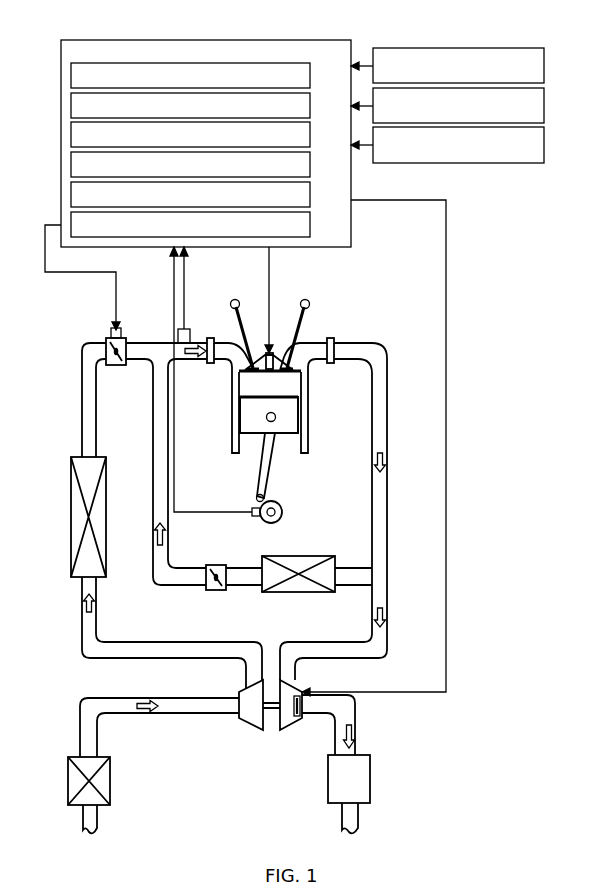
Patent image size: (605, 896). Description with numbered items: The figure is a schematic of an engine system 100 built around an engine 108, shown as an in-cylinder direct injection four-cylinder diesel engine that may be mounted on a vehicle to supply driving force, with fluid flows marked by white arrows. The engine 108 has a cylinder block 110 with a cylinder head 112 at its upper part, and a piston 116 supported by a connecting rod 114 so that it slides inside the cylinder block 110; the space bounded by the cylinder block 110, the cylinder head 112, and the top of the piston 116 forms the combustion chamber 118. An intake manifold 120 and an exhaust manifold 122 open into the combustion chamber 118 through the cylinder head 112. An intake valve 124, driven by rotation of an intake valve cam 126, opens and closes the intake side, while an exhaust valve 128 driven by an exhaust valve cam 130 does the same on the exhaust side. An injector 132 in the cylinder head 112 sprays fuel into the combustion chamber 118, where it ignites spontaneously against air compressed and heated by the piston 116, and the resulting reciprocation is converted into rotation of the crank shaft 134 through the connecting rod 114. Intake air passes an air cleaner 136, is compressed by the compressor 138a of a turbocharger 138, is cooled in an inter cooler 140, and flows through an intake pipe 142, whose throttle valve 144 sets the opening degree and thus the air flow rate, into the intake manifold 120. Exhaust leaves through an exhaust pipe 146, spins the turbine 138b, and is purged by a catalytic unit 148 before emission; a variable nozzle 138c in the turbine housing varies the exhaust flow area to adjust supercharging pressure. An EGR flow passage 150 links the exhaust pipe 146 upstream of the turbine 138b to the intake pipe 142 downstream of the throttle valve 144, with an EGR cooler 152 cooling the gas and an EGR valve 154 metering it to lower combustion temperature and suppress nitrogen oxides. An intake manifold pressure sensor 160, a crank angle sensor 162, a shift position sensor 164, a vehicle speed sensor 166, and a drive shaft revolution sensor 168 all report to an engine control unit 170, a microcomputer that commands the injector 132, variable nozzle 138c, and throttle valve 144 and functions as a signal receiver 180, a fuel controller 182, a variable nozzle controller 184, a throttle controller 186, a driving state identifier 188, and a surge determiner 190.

The engine system 100 is at (45, 91).
The engine 108 is at (360, 304).
The cylinder block 110 is at (232, 410).
The cylinder head 112 is at (232, 384).
The connecting rod 114 is at (275, 455).
The piston 116 is at (250, 440).
The combustion chamber 118 is at (273, 382).
The intake manifold 120 is at (233, 340).
The exhaust manifold 122 is at (300, 341).
The intake valve 124 is at (234, 318).
The intake valve cam 126 is at (231, 301).
The exhaust valve 128 is at (300, 322).
The exhaust valve cam 130 is at (308, 301).
The injector 132 is at (268, 351).
The crank shaft 134 is at (282, 502).
The air cleaner 136 is at (70, 757).
The turbocharger 138 is at (262, 748).
The compressor 138a is at (252, 731).
The turbine 138b is at (285, 731).
The variable nozzle 138c is at (301, 730).
The inter cooler 140 is at (73, 457).
The intake pipe 142 is at (86, 343).
The throttle valve 144 is at (107, 339).
The exhaust pipe 146 is at (383, 343).
The catalytic unit 148 is at (370, 755).
The EGR flow passage 150 is at (176, 586).
The EGR cooler 152 is at (296, 556).
The EGR valve 154 is at (217, 564).
The intake manifold pressure sensor 160 is at (178, 330).
The crank angle sensor 162 is at (252, 510).
The shift position sensor 164 is at (545, 67).
The vehicle speed sensor 166 is at (545, 107).
The drive shaft revolution sensor 168 is at (545, 146).
The engine control unit 170 is at (172, 40).
The signal receiver 180 is at (311, 77).
The fuel controller 182 is at (311, 107).
The variable nozzle controller 184 is at (311, 136).
The throttle controller 186 is at (311, 166).
The driving state identifier 188 is at (311, 196).
The surge determiner 190 is at (311, 226).